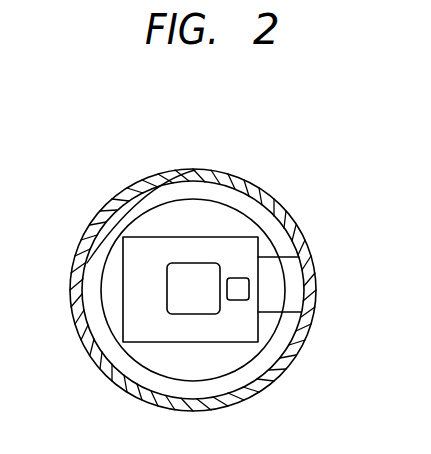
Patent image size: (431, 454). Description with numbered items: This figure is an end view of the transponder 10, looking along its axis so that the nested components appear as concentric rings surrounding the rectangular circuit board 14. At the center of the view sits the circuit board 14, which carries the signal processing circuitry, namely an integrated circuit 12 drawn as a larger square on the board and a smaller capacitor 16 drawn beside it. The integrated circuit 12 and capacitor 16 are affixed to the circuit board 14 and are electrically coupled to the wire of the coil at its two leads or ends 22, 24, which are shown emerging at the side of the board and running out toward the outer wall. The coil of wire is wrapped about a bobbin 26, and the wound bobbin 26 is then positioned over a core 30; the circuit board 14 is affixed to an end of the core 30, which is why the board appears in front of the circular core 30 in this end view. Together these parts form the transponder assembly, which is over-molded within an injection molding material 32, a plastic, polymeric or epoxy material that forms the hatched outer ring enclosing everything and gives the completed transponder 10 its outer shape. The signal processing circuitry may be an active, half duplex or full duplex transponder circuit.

The transponder 10 is at (298, 382).
The integrated circuit 12 is at (224, 200).
The circuit board 14 is at (150, 250).
The capacitor 16 is at (238, 277).
The lead or end of the wire 22 is at (298, 306).
The lead or end of the wire 24 is at (300, 258).
The bobbin 26 is at (93, 262).
The core 30 is at (163, 357).
The injection molding material 32 is at (153, 173).